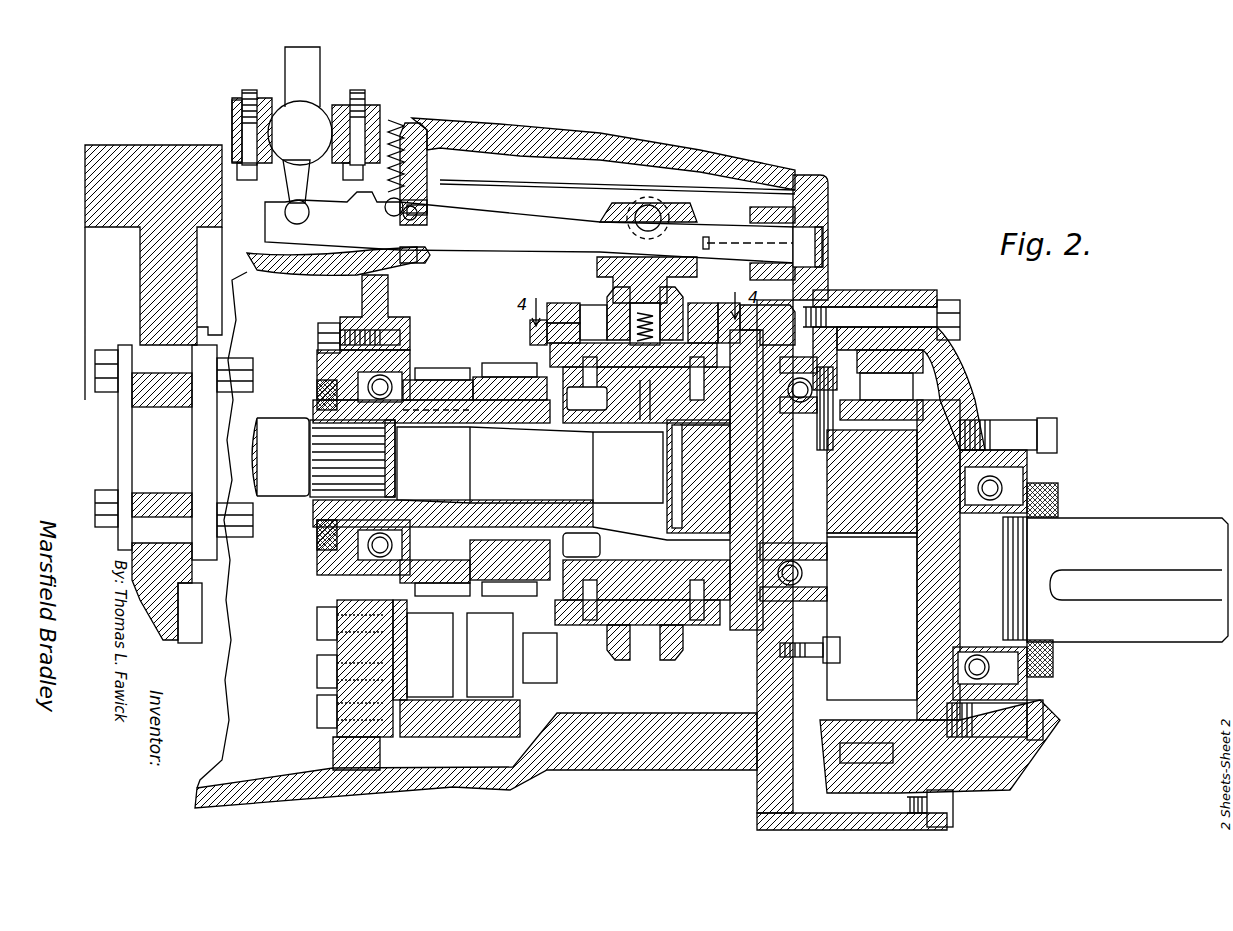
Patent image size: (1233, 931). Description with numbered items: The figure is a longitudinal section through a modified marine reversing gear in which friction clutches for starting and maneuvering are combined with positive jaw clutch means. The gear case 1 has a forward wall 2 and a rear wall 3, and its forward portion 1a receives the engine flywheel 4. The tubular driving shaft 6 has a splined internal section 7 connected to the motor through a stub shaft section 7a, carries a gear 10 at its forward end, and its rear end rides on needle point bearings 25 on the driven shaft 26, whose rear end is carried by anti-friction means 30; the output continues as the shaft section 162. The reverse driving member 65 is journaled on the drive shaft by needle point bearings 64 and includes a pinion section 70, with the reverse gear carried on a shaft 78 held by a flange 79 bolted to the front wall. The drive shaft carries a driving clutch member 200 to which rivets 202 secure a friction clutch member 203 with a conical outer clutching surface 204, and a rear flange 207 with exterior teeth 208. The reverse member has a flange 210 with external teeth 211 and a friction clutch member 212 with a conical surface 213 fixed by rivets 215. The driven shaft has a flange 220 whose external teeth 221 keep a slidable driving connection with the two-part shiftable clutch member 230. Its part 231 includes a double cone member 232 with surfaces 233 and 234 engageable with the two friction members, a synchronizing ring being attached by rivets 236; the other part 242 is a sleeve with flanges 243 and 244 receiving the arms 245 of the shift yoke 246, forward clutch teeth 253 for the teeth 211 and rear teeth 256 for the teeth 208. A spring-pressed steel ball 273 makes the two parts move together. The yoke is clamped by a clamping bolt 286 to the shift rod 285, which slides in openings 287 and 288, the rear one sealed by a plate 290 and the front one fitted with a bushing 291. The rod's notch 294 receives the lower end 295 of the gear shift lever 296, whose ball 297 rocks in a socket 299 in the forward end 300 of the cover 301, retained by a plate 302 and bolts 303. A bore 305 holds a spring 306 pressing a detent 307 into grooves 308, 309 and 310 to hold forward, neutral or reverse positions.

The gear case 1 is at (845, 213).
The forward portion of the case 1a is at (252, 250).
The forward wall 2 is at (368, 297).
The rear wall 3 is at (830, 285).
The flywheel 4 is at (127, 146).
The driving shaft 6 is at (432, 380).
The splined internal section 7 is at (395, 440).
The stub shaft section 7a is at (262, 398).
The gear 10 is at (458, 372).
The needle point bearings 25 is at (720, 480).
The driven shaft 26 is at (581, 545).
The anti-friction means 30 is at (797, 405).
The needle point bearings 64 is at (505, 427).
The reverse driving member 65 is at (548, 380).
The pinion section 70 is at (497, 366).
The shaft 78 is at (495, 668).
The flange 79 is at (317, 646).
The shaft section 162 is at (1097, 535).
The driving clutch member 200 is at (827, 440).
The rivets 202 is at (725, 420).
The friction clutch member 203 is at (662, 540).
The conical outer clutching surface 204 is at (710, 625).
The flange 207 is at (808, 355).
The exterior teeth 208 is at (755, 312).
The flange 210 is at (540, 328).
The external teeth 211 is at (577, 322).
The friction clutch member 212 is at (615, 405).
The exterior conical clutching surface 213 is at (640, 405).
The rivets 215 is at (585, 410).
The flange 220 is at (827, 620).
The external teeth 221 is at (770, 640).
The shiftable clutch member 230 is at (605, 295).
The part of shiftable clutch member 231 is at (563, 312).
The double cone member 232 is at (545, 345).
The surface 233 is at (700, 625).
The surface 234 is at (587, 635).
The rivets 236 is at (660, 640).
The part of shiftable clutch member 242 is at (730, 305).
The flange 243 is at (620, 280).
The flange 244 is at (700, 243).
The arms 245 is at (645, 310).
The shift yoke 246 is at (700, 207).
The clutch teeth 253 is at (564, 293).
The teeth 256 is at (700, 316).
The steel ball 273 is at (690, 405).
The shift rod 285 is at (527, 225).
The clamping bolt 286 is at (650, 208).
The opening 287 is at (418, 252).
The opening 288 is at (825, 233).
The plate 290 is at (827, 254).
The bushing 291 is at (425, 205).
The notch 294 is at (265, 218).
The lower end of gear shift lever 295 is at (288, 207).
The gear shift lever 296 is at (320, 57).
The ball 297 is at (312, 118).
The socket 299 is at (385, 110).
The forward end of gear case cover 300 is at (232, 124).
The gear case cover 301 is at (480, 145).
The plate 302 is at (262, 100).
The bolts 303 is at (245, 90).
The bore 305 is at (415, 120).
The spring 306 is at (432, 128).
The detent 307 is at (388, 214).
The groove 308 is at (355, 205).
The groove 309 is at (410, 218).
The groove 310 is at (420, 212).